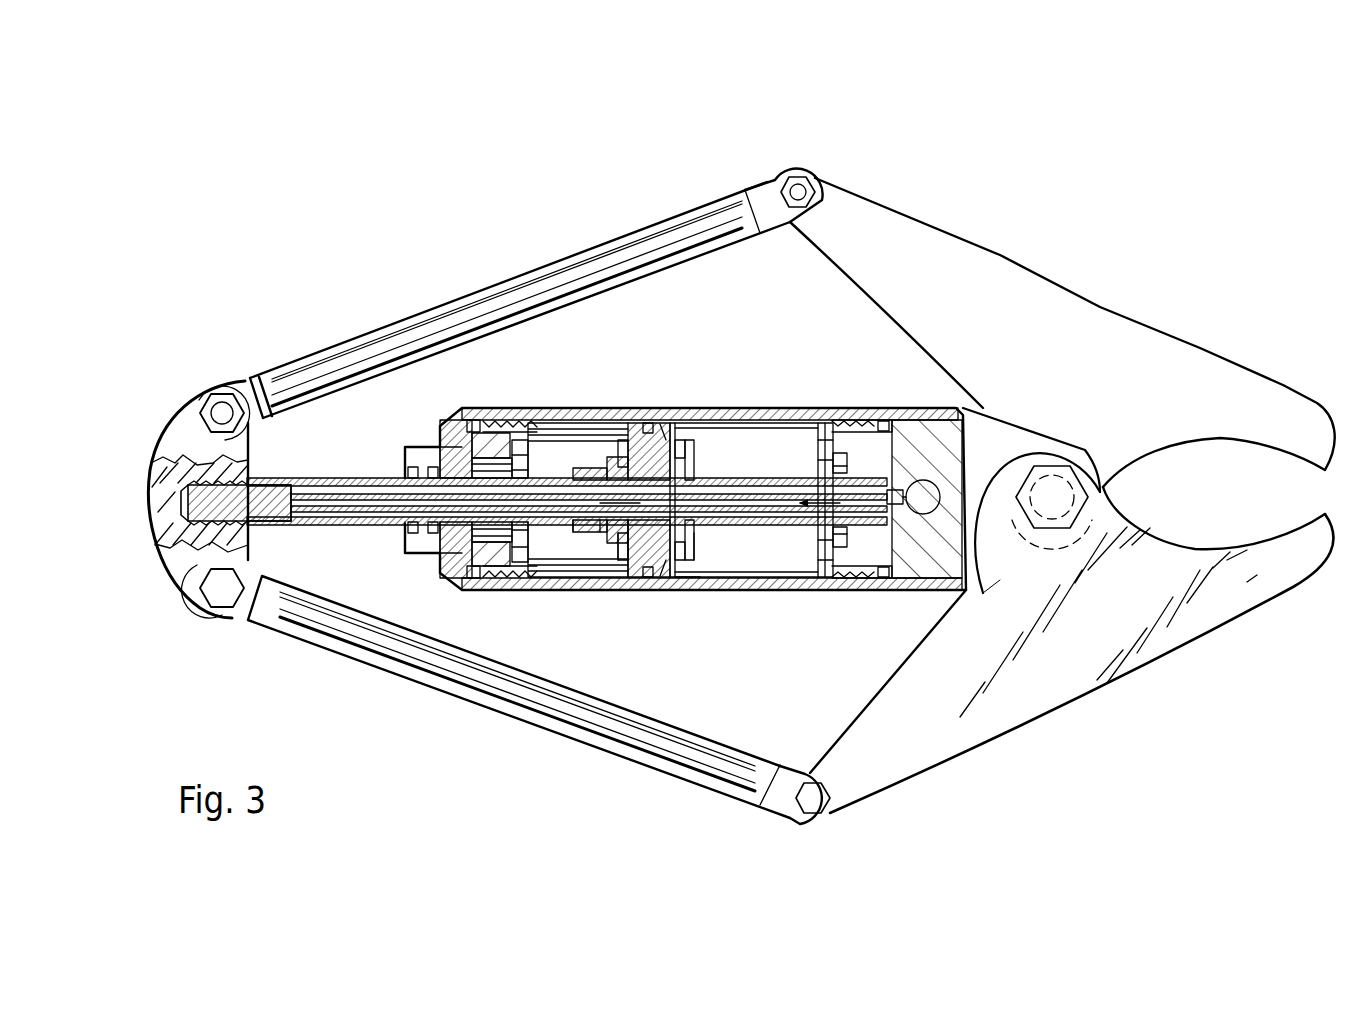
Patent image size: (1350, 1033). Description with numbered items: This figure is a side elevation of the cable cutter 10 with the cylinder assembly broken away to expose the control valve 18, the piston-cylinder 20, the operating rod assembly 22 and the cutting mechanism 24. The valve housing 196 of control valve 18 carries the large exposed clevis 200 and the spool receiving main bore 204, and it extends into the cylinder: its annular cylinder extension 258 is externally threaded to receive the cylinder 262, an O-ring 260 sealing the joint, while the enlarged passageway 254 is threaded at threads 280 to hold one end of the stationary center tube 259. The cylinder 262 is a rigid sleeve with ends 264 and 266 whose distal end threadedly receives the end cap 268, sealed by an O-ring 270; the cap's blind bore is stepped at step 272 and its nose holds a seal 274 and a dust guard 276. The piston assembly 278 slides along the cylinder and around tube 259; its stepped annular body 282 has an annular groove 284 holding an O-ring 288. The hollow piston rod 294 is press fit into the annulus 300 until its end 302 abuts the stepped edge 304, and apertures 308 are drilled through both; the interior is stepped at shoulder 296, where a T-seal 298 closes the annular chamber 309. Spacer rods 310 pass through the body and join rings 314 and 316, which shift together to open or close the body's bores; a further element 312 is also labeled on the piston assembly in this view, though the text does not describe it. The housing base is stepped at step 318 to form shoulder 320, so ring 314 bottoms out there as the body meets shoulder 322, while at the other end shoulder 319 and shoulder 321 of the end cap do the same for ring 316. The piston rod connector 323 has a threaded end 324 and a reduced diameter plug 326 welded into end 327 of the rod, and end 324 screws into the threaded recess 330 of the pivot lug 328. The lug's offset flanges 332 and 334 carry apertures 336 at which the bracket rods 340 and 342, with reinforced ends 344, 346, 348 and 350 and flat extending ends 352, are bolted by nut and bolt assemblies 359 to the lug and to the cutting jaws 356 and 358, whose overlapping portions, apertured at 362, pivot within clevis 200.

The cable cutter 10 is at (997, 216).
The control valve 18 is at (975, 532).
The piston-cylinder 20 is at (790, 594).
The operating rod assembly 22 is at (480, 288).
The cutting mechanism 24 is at (1071, 650).
The valve housing 196 is at (915, 402).
The clevis 200 is at (1068, 440).
The spool receiving main bore 204 is at (921, 497).
The transverse passageway 254 is at (925, 562).
The cylinder extension 258 is at (830, 582).
The center cylindrical tube 259 is at (742, 496).
The O-ring 260 is at (850, 578).
The cylinder 262 is at (742, 578).
The cylinder end 264 is at (838, 582).
The cylinder end 266 is at (500, 578).
The end cap 268 is at (412, 545).
The O-ring 270 is at (473, 418).
The step 272 is at (565, 426).
The seal 274 is at (433, 466).
The dust guard 276 is at (413, 466).
The piston assembly 278 is at (692, 440).
The threads 280 is at (880, 425).
The piston body 282 is at (700, 582).
The annular groove 284 is at (612, 438).
The O-ring 288 is at (632, 438).
The piston rod 294 is at (385, 476).
The shoulder 296 is at (700, 470).
The T-seal 298 is at (700, 521).
The annulus 300 is at (598, 540).
The piston rod end 302 is at (642, 580).
The stepped edge 304 is at (692, 448).
The apertures 308 is at (612, 536).
The annular chamber 309 is at (518, 562).
The spacer rod 310 is at (660, 440).
The piston plate 312 is at (648, 430).
The ring 314 is at (682, 572).
The ring 316 is at (628, 556).
The step 318 is at (822, 440).
The shoulder 319 is at (540, 428).
The shoulder 320 is at (826, 452).
The shoulder 321 is at (520, 420).
The shoulder 322 is at (840, 455).
The piston rod connector 323 is at (286, 490).
The threaded end 324 is at (165, 483).
The reduced diameter plug 326 is at (300, 500).
The piston rod end 327 is at (276, 480).
The pivot lug 328 is at (158, 505).
The threaded recess 330 is at (175, 460).
The offset flange 332 is at (182, 420).
The offset flange 334 is at (165, 580).
The apertures 336 is at (212, 398).
The bracket rod 340 is at (500, 735).
The bracket rod 342 is at (412, 312).
The reinforced end 344 is at (205, 615).
The reinforced end 346 is at (775, 815).
The reinforced end 348 is at (226, 386).
The reinforced end 350 is at (780, 176).
The extending end 352 is at (748, 190).
The cutting jaw 356 is at (1000, 745).
The cutting jaw 358 is at (1031, 262).
The nut and bolt assemblies 359 is at (822, 196).
The jaw aperture 362 is at (1090, 460).